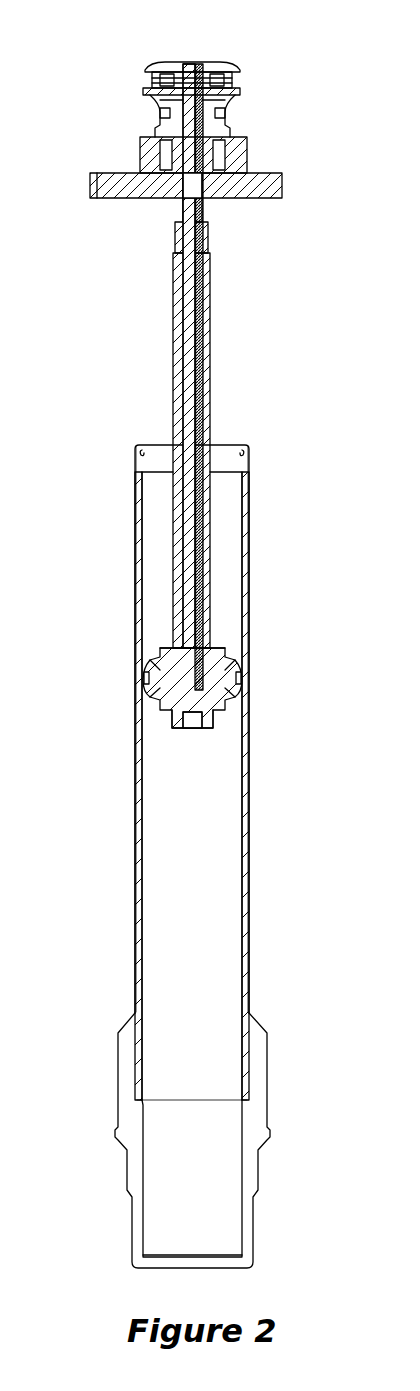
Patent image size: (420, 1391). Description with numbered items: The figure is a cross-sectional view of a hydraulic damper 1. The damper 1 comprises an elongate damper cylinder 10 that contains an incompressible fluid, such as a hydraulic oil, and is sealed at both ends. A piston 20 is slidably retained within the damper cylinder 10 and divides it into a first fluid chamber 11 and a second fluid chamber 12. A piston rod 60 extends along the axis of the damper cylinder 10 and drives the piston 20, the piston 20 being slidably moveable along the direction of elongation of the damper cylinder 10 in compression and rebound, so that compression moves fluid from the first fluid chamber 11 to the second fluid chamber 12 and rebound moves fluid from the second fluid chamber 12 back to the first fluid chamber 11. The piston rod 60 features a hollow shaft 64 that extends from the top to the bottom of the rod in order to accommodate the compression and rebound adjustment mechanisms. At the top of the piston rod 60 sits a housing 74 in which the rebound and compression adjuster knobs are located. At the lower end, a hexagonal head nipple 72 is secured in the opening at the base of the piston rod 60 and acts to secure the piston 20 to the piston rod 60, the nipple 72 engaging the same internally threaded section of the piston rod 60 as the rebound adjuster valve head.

The hydraulic damper 1 is at (100, 575).
The damper cylinder 10 is at (250, 827).
The first fluid chamber 11 is at (218, 920).
The second fluid chamber 12 is at (230, 532).
The piston 20 is at (225, 668).
The piston rod 60 is at (208, 347).
The hollow shaft 64 is at (202, 392).
The hexagonal head nipple 72 is at (172, 717).
The housing 74 is at (253, 60).